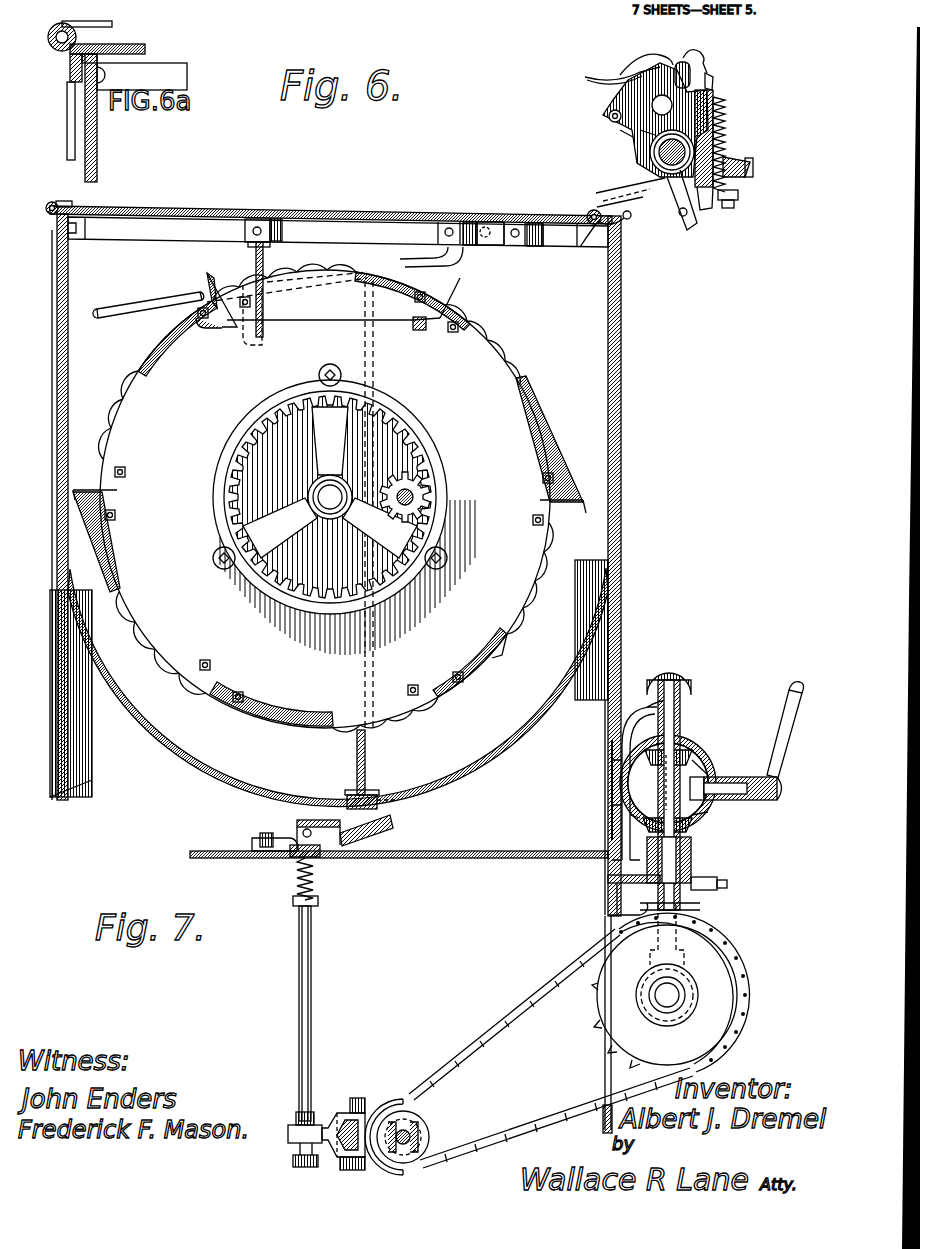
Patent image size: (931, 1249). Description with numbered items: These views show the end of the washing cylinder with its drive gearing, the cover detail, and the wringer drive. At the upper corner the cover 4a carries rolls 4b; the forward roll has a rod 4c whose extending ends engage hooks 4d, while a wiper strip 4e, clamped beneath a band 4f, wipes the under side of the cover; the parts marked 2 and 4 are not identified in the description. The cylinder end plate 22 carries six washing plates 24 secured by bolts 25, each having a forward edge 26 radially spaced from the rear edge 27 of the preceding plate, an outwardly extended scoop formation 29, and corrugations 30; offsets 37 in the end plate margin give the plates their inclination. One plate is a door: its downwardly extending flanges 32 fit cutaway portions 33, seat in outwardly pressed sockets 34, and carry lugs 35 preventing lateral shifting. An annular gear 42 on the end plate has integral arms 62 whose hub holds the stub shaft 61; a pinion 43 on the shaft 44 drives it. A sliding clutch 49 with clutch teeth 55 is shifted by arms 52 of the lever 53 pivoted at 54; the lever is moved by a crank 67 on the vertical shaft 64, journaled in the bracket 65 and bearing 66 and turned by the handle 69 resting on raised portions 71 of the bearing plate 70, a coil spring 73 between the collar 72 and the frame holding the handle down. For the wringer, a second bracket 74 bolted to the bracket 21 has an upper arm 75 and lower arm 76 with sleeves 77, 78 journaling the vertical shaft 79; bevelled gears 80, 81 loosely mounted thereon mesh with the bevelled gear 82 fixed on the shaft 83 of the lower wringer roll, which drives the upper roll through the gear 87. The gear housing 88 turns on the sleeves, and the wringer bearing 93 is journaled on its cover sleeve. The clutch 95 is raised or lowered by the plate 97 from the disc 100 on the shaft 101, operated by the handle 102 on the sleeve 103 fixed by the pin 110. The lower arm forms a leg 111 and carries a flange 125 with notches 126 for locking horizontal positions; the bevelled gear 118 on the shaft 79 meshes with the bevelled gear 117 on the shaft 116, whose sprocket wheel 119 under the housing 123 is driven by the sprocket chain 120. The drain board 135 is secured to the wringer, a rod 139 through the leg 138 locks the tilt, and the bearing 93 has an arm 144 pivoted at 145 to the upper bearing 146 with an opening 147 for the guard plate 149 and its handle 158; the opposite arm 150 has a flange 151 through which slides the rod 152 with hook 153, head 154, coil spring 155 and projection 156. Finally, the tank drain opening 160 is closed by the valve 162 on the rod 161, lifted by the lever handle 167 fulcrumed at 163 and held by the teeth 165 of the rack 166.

In FIG. 6A, the curtain / side plate 2 is at (75, 160).
In FIG. 6, the curtain / side plate 2 is at (60, 665).
In FIG. 6A, the frame member 4 is at (97, 160).
In FIG. 6, the frame member 4 is at (172, 752).
In FIG. 6A, the cover 4a is at (145, 49).
In FIG. 6, the cover 4a is at (143, 212).
In FIG. 6A, the rolls 4b is at (54, 29).
In FIG. 6, the rolls 4b is at (50, 205).
In FIG. 6, the rod 4c is at (580, 247).
In FIG. 6A, the hooks 4d is at (112, 24).
In FIG. 6, the hooks 4d is at (70, 203).
In FIG. 6A, the wiper strip 4e is at (82, 88).
In FIG. 6, the wiper strip 4e is at (73, 217).
In FIG. 6A, the band 4f is at (70, 66).
In FIG. 7, the bracket 21 is at (607, 815).
In FIG. 6, the end plate 22 is at (325, 499).
In FIG. 6, the circumferential washing plates 24 is at (323, 268).
In FIG. 6, the bolts 25 is at (453, 333).
In FIG. 6, the forward edge 26 is at (77, 490).
In FIG. 6, the rear edge 27 is at (113, 490).
In FIG. 6, the scoop formation 29 is at (560, 470).
In FIG. 6, the corrugations 30 is at (512, 356).
In FIG. 6, the flanges 32 is at (333, 296).
In FIG. 6, the cutaway portions 33 is at (340, 322).
In FIG. 6, the sockets 34 is at (215, 328).
In FIG. 6, the lugs 35 is at (416, 330).
In FIG. 6, the offsets 37 is at (222, 690).
In FIG. 6, the annular gear 42 is at (228, 465).
In FIG. 6, the pinion 43 is at (415, 480).
In FIG. 6, the shaft 44 is at (414, 500).
In FIG. 7, the shaft 44 is at (410, 1142).
In FIG. 7, the sliding clutch 49 is at (386, 1168).
In FIG. 7, the arms 52 is at (399, 1100).
In FIG. 7, the lever 53 is at (338, 1115).
In FIG. 7, the pivot 54 is at (360, 1098).
In FIG. 7, the clutch teeth 55 is at (420, 1122).
In FIG. 6, the stub shaft 61 is at (330, 497).
In FIG. 6, the arms 62 is at (317, 543).
In FIG. 7, the vertical shaft 64 is at (298, 960).
In FIG. 7, the bracket 65 is at (293, 1160).
In FIG. 7, the bearing 66 is at (300, 858).
In FIG. 7, the crank 67 is at (298, 1115).
In FIG. 7, the handle 69 is at (392, 828).
In FIG. 7, the bearing plate 70 is at (252, 840).
In FIG. 7, the raised portions 71 is at (262, 835).
In FIG. 7, the collar 72 is at (318, 900).
In FIG. 7, the coil spring 73 is at (313, 878).
In FIG. 7, the second bracket 74 is at (607, 790).
In FIG. 7, the upper arm 75 is at (642, 717).
In FIG. 7, the lower arm 76 is at (608, 890).
In FIG. 7, the sleeve 77 is at (686, 712).
In FIG. 7, the sleeve 78 is at (691, 855).
In FIG. 7, the vertical shaft 79 is at (680, 680).
In FIG. 7, the bevelled gear 80 is at (687, 752).
In FIG. 7, the bevelled gear 81 is at (630, 827).
In FIG. 7, the bevelled gear 82 is at (700, 770).
In FIG. 6, the shaft 83 is at (653, 188).
In FIG. 6, the gear 87 is at (648, 133).
In FIG. 7, the gear housing 88 is at (612, 775).
In FIG. 6, the bearing 93 is at (650, 167).
In FIG. 7, the clutch 95 is at (640, 795).
In FIG. 7, the plate 97 is at (706, 778).
In FIG. 7, the disc 100 is at (700, 820).
In FIG. 7, the shaft 101 is at (735, 778).
In FIG. 7, the handle 102 is at (785, 705).
In FIG. 7, the sleeve 103 is at (760, 800).
In FIG. 7, the pin 110 is at (740, 800).
In FIG. 7, the leg 111 is at (700, 905).
In FIG. 7, the shaft 116 is at (665, 995).
In FIG. 7, the bevelled gear 117 is at (694, 1017).
In FIG. 7, the bevelled gear 118 is at (645, 968).
In FIG. 7, the sprocket wheel 119 is at (718, 1003).
In FIG. 7, the sprocket chain 120 is at (510, 1132).
In FIG. 7, the housing 123 is at (745, 1040).
In FIG. 7, the flange 125 is at (700, 878).
In FIG. 7, the notches 126 is at (727, 885).
In FIG. 6, the drain board 135 is at (753, 165).
In FIG. 6, the leg 138 is at (676, 208).
In FIG. 6, the rod 139 is at (689, 215).
In FIG. 6, the arm 144 is at (627, 137).
In FIG. 6, the pivot 145 is at (609, 116).
In FIG. 6, the upper bearing 146 is at (622, 102).
In FIG. 6, the opening 147 is at (678, 62).
In FIG. 6, the upper roll guard plate 149 is at (648, 63).
In FIG. 6, the arm 150 is at (726, 108).
In FIG. 6, the flange 151 is at (720, 93).
In FIG. 6, the rod 152 is at (738, 158).
In FIG. 6, the hook 153 is at (697, 53).
In FIG. 6, the head 154 is at (740, 200).
In FIG. 6, the coil spring 155 is at (725, 128).
In FIG. 6, the projection 156 is at (714, 83).
In FIG. 6, the handle 158 is at (611, 71).
In FIG. 6, the opening 160 is at (407, 801).
In FIG. 6, the rod 161 is at (365, 748).
In FIG. 6, the valve 162 is at (345, 795).
In FIG. 6, the fulcrum 163 is at (485, 227).
In FIG. 6, the teeth 165 is at (250, 242).
In FIG. 6, the rack 166 is at (248, 270).
In FIG. 6, the lever handle 167 is at (118, 312).